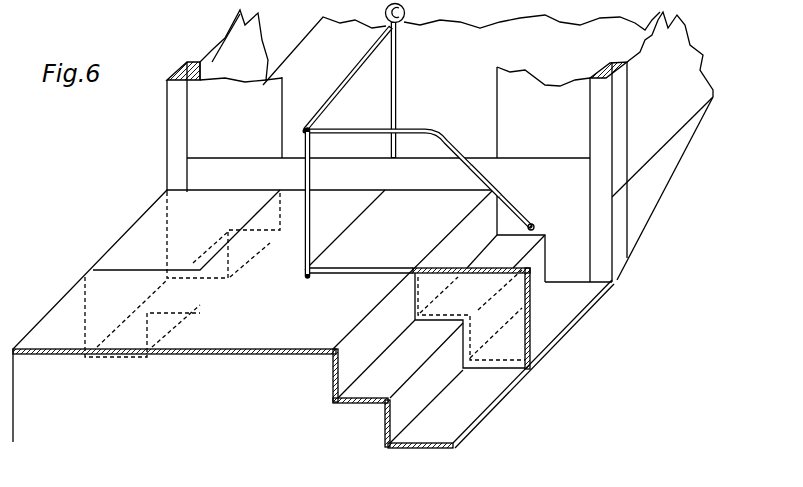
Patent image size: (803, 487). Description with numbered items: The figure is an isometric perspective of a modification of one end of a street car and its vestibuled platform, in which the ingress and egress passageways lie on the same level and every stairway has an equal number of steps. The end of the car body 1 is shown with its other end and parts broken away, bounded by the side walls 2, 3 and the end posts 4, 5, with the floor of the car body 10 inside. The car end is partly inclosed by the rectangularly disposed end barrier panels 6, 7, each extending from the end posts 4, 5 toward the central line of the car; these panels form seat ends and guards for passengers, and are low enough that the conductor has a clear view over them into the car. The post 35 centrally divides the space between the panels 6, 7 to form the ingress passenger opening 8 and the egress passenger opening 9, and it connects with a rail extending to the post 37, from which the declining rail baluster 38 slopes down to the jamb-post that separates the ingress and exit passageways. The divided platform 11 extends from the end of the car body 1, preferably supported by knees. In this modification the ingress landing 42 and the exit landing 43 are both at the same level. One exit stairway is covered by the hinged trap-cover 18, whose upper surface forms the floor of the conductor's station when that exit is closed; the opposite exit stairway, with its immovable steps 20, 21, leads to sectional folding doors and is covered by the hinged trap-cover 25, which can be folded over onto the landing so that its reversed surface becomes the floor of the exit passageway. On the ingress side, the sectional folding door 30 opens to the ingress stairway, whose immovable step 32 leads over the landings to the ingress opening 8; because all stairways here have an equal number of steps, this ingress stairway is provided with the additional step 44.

The end of the car body 1 is at (500, 22).
The side wall 2 is at (210, 52).
The side wall 3 is at (668, 84).
The end post 4 is at (182, 122).
The end post 5 is at (618, 163).
The end barrier panel 6 is at (540, 113).
The end barrier panel 7 is at (229, 126).
The ingress passenger opening 8 is at (417, 178).
The egress passenger opening 9 is at (490, 182).
The floor of the car body 10 is at (461, 85).
The divided platform 11 is at (217, 355).
The hinged trap-cover 18 is at (182, 273).
The immovable step 20 is at (506, 236).
The immovable step 21 is at (578, 295).
The hinged trap-cover 25 is at (359, 231).
The sectional folding door 30 is at (341, 86).
The immovable step 32 is at (480, 418).
The post 35 is at (400, 83).
The post 37 is at (311, 220).
The declining rail baluster 38 is at (474, 174).
The ingress landing 42 is at (253, 316).
The exit landing 43 is at (448, 257).
The additional step 44 is at (382, 383).